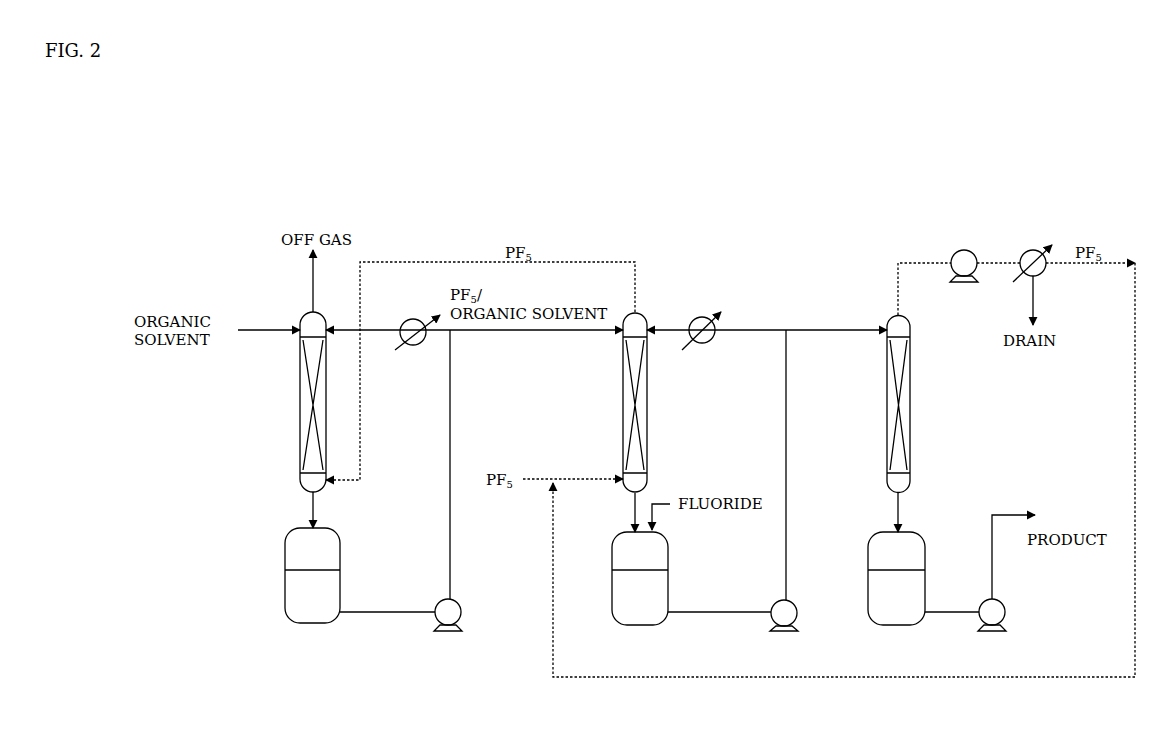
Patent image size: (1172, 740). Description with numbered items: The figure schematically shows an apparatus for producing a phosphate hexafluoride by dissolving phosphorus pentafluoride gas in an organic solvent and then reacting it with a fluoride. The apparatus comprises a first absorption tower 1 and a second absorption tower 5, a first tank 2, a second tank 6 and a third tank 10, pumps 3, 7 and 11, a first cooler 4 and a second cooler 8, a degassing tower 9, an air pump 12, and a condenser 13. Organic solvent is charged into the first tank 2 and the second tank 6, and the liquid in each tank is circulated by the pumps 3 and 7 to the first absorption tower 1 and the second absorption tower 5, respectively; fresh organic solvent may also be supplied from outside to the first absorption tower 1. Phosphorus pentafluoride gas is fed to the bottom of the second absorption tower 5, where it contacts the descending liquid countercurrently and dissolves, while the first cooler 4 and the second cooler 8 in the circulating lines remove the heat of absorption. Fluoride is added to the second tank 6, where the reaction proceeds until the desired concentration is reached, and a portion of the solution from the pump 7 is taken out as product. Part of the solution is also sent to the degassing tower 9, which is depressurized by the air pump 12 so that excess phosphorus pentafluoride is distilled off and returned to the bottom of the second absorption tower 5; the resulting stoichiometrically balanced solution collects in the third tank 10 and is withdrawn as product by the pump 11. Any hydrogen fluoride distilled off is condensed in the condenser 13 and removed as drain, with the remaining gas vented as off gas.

The first absorption tower 1 is at (302, 395).
The first tank 2 is at (285, 543).
The pump 3 is at (461, 612).
The first cooler 4 is at (402, 324).
The second absorption tower 5 is at (623, 395).
The second tank 6 is at (612, 560).
The pump 7 is at (797, 613).
The second cooler 8 is at (690, 322).
The degassing tower 9 is at (887, 395).
The third tank 10 is at (868, 558).
The pump 11 is at (1005, 613).
The air pump 12 is at (958, 251).
The condenser 13 is at (1025, 251).